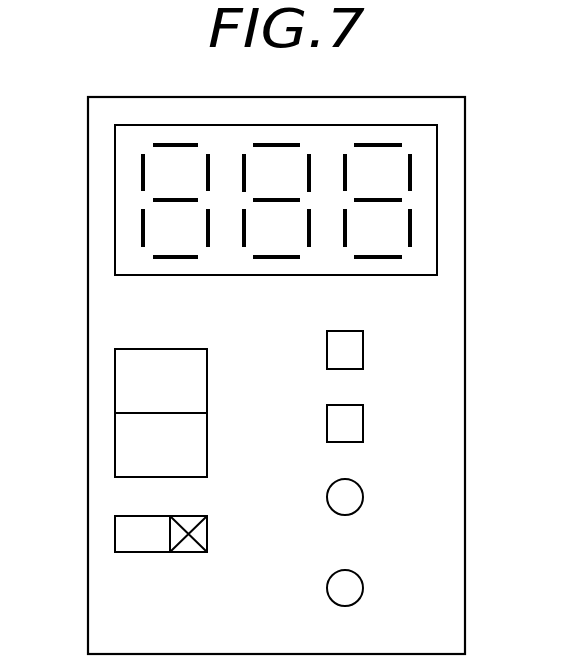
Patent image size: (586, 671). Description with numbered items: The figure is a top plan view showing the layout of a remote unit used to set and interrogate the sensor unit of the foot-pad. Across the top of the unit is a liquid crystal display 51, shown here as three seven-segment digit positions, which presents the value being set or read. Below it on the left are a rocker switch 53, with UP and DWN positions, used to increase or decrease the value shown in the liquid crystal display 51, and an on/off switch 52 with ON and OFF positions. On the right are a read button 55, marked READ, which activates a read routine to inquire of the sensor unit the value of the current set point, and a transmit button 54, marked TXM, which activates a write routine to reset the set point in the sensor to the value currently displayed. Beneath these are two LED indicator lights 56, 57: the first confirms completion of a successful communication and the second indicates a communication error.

The liquid crystal display 51 is at (437, 200).
The on/off switch 52 is at (115, 532).
The rocker switch 53 is at (115, 386).
The transmit button 54 is at (326, 421).
The read button 55 is at (326, 348).
The indicator light 56 is at (327, 497).
The indicator light 57 is at (327, 588).